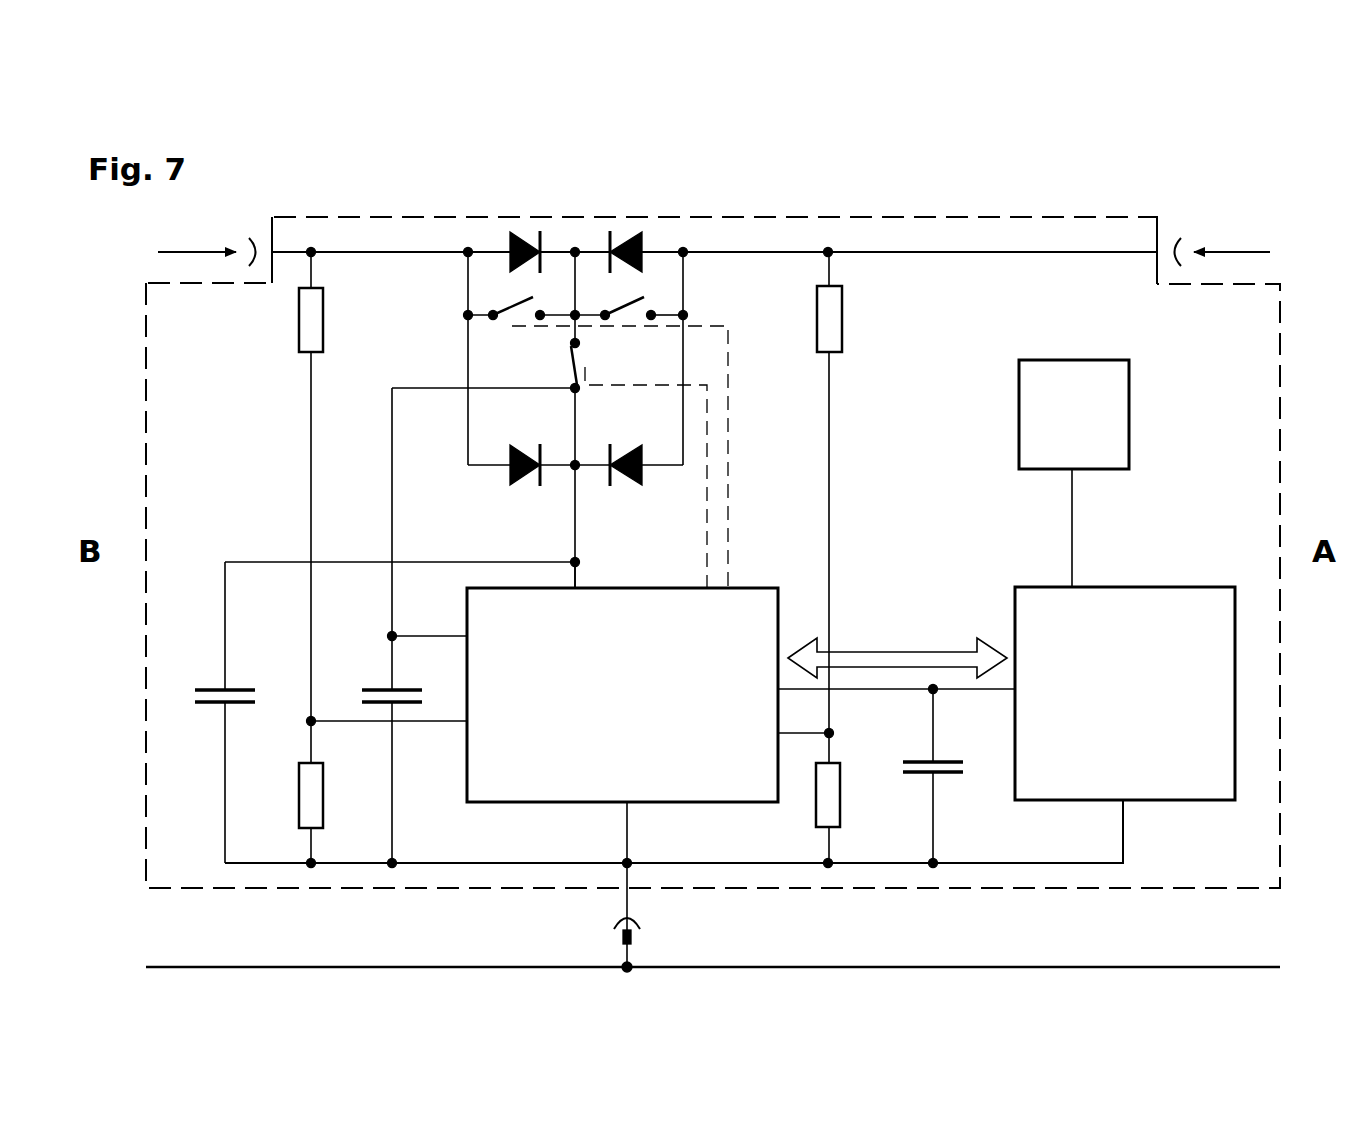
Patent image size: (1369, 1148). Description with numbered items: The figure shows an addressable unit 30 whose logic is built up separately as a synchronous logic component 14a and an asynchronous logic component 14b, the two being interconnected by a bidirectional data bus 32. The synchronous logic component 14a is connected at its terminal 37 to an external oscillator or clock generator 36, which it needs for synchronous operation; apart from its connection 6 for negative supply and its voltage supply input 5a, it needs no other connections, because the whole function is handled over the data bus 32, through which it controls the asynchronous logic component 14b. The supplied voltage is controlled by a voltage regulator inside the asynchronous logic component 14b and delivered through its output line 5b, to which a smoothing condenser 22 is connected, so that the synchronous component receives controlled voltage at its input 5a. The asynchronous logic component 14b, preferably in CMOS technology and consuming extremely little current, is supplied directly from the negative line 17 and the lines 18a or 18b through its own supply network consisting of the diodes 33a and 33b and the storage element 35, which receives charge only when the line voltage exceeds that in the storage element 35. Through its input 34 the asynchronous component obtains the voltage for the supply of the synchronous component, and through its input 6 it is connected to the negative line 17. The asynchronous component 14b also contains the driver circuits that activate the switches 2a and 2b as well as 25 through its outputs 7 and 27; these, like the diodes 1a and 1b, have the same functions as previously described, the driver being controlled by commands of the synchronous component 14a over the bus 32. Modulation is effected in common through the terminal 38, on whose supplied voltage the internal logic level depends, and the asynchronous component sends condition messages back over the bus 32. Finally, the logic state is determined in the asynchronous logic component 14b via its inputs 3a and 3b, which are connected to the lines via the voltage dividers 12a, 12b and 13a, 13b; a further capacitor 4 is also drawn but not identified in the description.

The diode 1a is at (620, 228).
The diode 1b is at (513, 228).
The switch 2a is at (641, 322).
The switch 2b is at (497, 330).
The switch 25 is at (561, 357).
The diode 33a is at (616, 480).
The diode 33b is at (526, 490).
The voltage divider resistor 13a is at (866, 507).
The voltage divider resistor 13b is at (345, 507).
The voltage divider resistor 12a is at (861, 813).
The voltage divider resistor 12b is at (340, 813).
The synchronous logic component 14a is at (1233, 583).
The asynchronous logic component 14b is at (787, 584).
The clock generator 36 is at (1074, 414).
The terminal 37 is at (1069, 549).
The input 38 is at (575, 593).
The output 27 is at (701, 606).
The output 7 is at (748, 606).
The input 34 is at (451, 635).
The input 3a is at (784, 732).
The input 3b is at (411, 720).
The voltage supply input 5a is at (1042, 689).
The output line 5b is at (873, 687).
The connection for negative supply 6 is at (879, 813).
The bidirectional data bus 32 is at (897, 646).
The smoothing condenser 22 is at (941, 774).
The storage element 35 is at (216, 683).
The capacitor 4 is at (388, 682).
The addressable unit 30 is at (145, 350).
The negative line 17 is at (652, 917).
The line 18a is at (1223, 240).
The line 18b is at (232, 249).